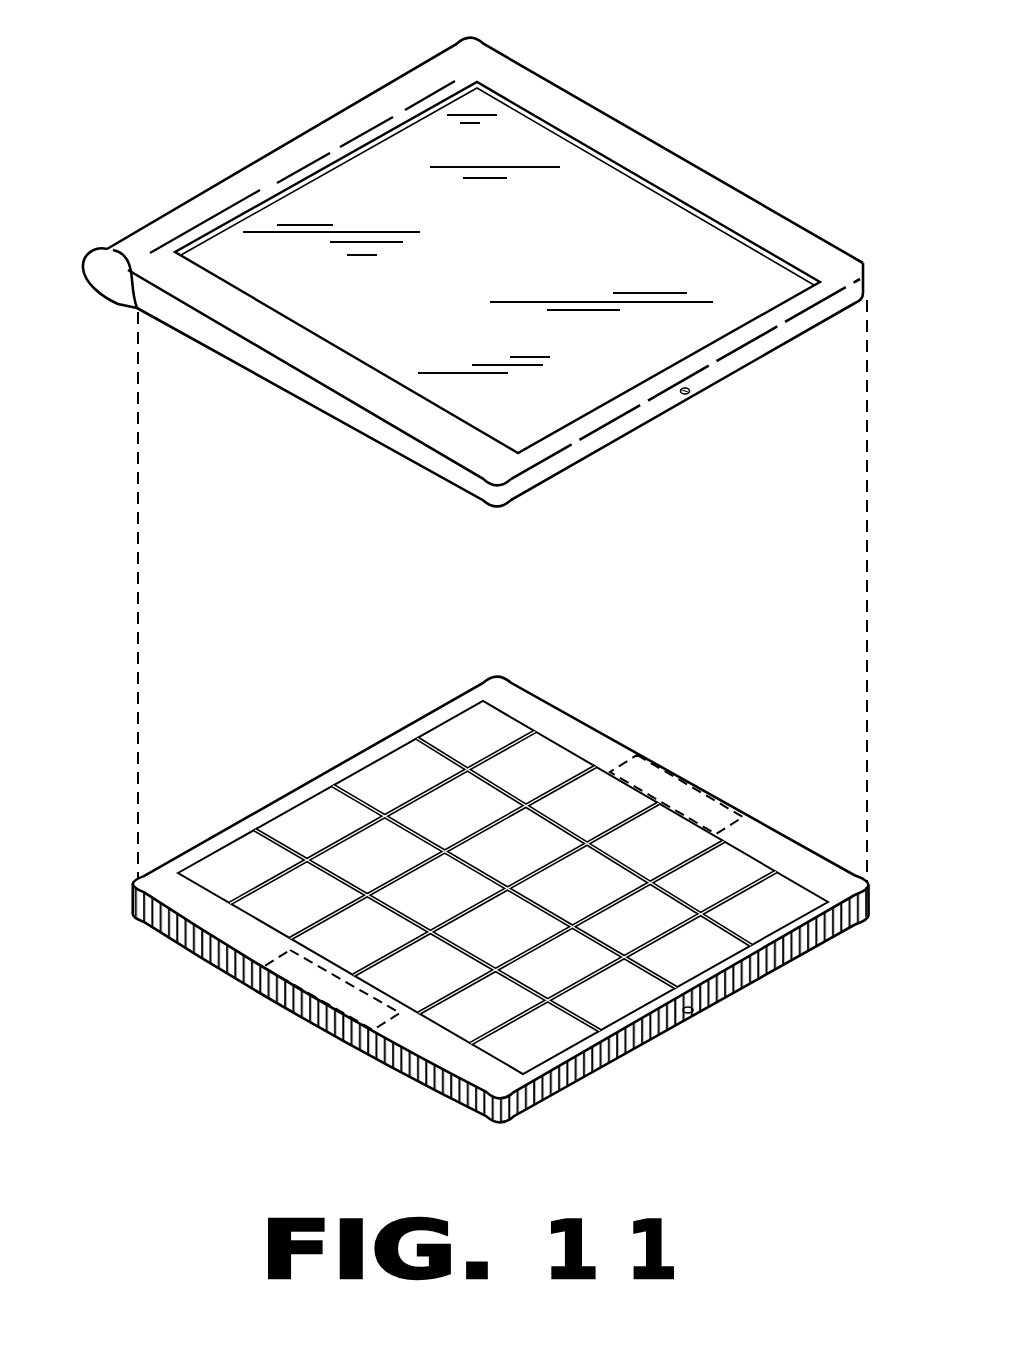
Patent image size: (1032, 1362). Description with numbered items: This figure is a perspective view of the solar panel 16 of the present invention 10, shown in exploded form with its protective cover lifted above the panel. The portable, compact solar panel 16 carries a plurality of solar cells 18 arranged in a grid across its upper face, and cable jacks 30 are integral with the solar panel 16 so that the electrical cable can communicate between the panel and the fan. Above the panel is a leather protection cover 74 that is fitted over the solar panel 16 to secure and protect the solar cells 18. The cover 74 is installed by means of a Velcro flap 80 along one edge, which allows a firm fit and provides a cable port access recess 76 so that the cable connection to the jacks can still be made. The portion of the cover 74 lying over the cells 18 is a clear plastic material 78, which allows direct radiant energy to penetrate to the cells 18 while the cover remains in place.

The present invention 10 is at (838, 166).
The solar panel 16 is at (293, 790).
The solar cells 18 is at (533, 837).
The cable jacks 30 is at (689, 1008).
The leather protection cover 74 is at (310, 372).
The cable port access recess 76 is at (686, 394).
The clear plastic material 78 is at (580, 232).
The Velcro flap 80 is at (118, 254).